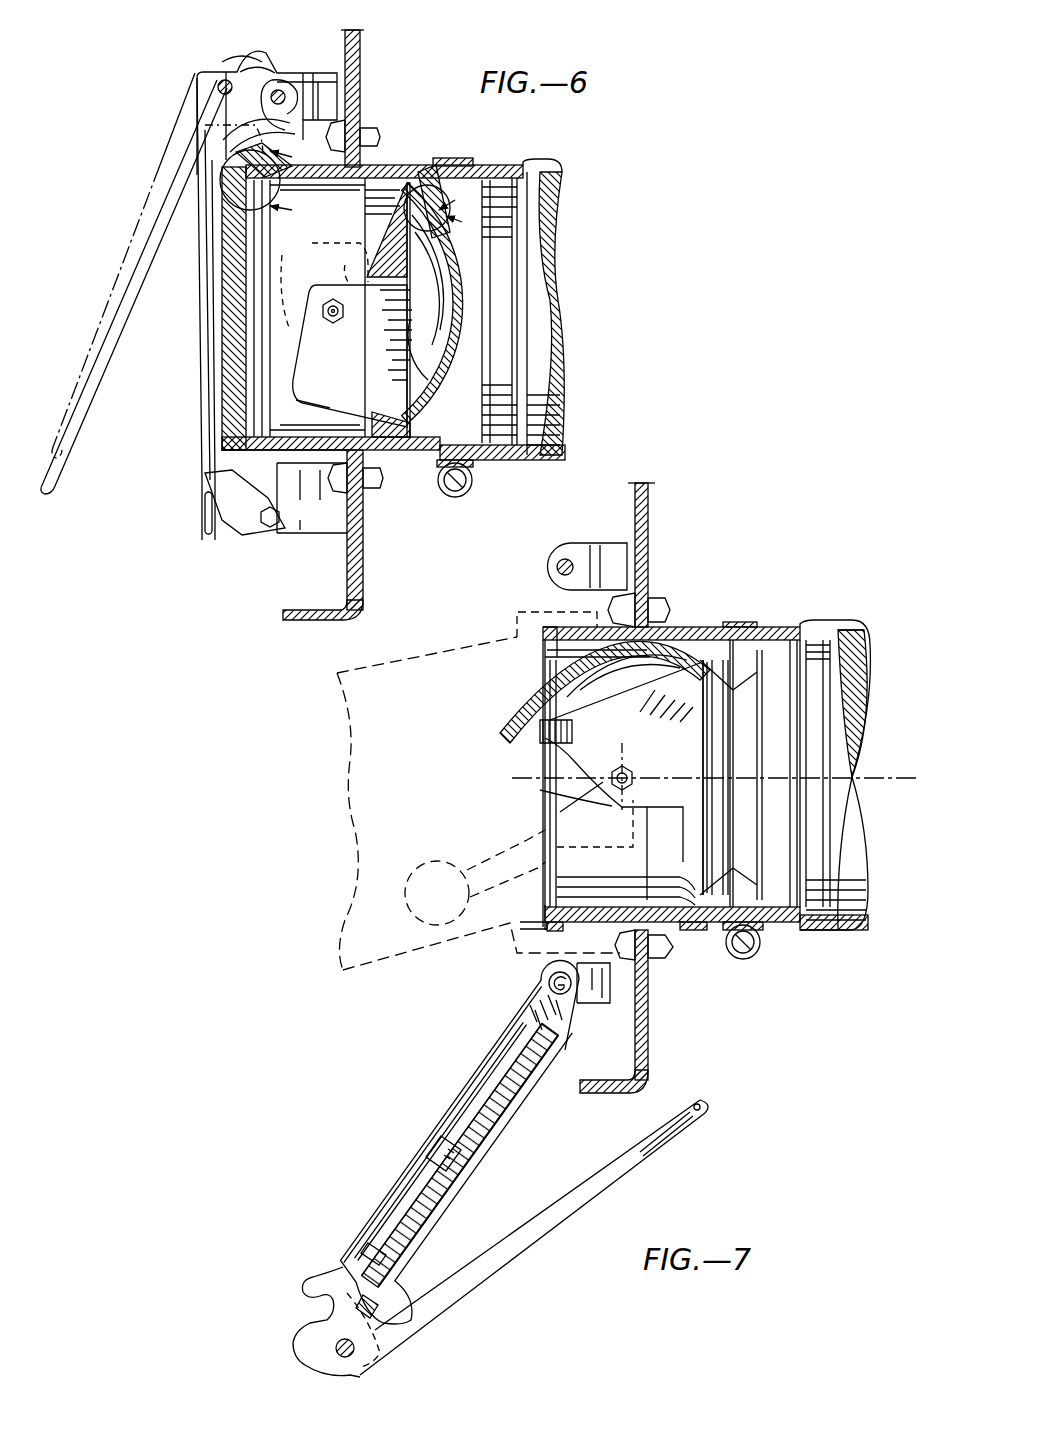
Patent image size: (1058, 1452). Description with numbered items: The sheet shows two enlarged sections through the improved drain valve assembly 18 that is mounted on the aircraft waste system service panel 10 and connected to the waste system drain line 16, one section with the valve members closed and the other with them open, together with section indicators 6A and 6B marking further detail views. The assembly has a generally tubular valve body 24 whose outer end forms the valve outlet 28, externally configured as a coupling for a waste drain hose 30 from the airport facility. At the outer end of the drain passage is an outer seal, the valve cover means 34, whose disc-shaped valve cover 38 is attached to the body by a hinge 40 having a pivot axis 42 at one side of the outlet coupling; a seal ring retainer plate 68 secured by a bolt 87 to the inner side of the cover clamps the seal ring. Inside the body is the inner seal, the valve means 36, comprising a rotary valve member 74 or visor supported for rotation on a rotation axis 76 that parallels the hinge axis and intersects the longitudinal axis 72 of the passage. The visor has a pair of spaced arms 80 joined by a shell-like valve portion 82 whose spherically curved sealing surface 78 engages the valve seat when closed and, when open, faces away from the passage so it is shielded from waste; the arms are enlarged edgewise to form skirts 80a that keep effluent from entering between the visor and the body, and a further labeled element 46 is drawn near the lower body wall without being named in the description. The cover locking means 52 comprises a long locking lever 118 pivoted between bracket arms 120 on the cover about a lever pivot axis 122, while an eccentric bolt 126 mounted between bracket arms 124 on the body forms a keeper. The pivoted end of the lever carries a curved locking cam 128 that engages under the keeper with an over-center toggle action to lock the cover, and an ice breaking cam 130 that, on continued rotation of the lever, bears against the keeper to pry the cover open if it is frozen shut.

In FIG. 6, the aircraft waste system service panel 10 is at (375, 548).
In FIG. 6, the waste system drain line 16 is at (565, 232).
In FIG. 6, the drain valve assembly 18 is at (203, 522).
In FIG. 7, the valve body 24 is at (682, 640).
In FIG. 7, the valve outlet 28 is at (540, 640).
In FIG. 7, the waste drain hose 30 is at (345, 800).
In FIG. 7, the valve cover means 34 is at (395, 1183).
In FIG. 7, the valve means 36 is at (535, 752).
In FIG. 7, the valve cover 38 is at (498, 1122).
In FIG. 7, the hinge 40 is at (525, 1000).
In FIG. 7, the pivot axis 42 is at (548, 975).
In FIG. 7, the housing bottom 46 is at (545, 915).
In FIG. 6, the cover locking means 52 is at (242, 38).
In FIG. 7, the cover locking means 52 is at (305, 1375).
In FIG. 7, the seal ring retainer plate 68 is at (500, 1081).
In FIG. 7, the longitudinal axis 72 is at (900, 778).
In FIG. 6, the valve member 74 is at (472, 352).
In FIG. 7, the valve member 74 is at (667, 632).
In FIG. 7, the rotation axis 76 is at (560, 812).
In FIG. 7, the sealing surface 78 is at (507, 722).
In FIG. 6, the arms 80 is at (338, 300).
In FIG. 6, the skirts 80a is at (328, 390).
In FIG. 7, the skirts 80a is at (670, 830).
In FIG. 6, the valve portion 82 is at (444, 318).
In FIG. 7, the valve portion 82 is at (530, 684).
In FIG. 7, the bolt 87 is at (440, 1140).
In FIG. 6, the locking lever 118 is at (140, 225).
In FIG. 6, the bracket arms 120 is at (205, 125).
In FIG. 6, the lever pivot axis 122 is at (225, 80).
In FIG. 6, the bracket arms 124 is at (361, 60).
In FIG. 6, the eccentric bolt 126 is at (274, 80).
In FIG. 6, the locking cam 128 is at (361, 92).
In FIG. 6, the ice breaking cam 130 is at (275, 88).
In FIG. 6, the section line 6A is at (272, 179).
In FIG. 6, the section line 6B is at (465, 206).